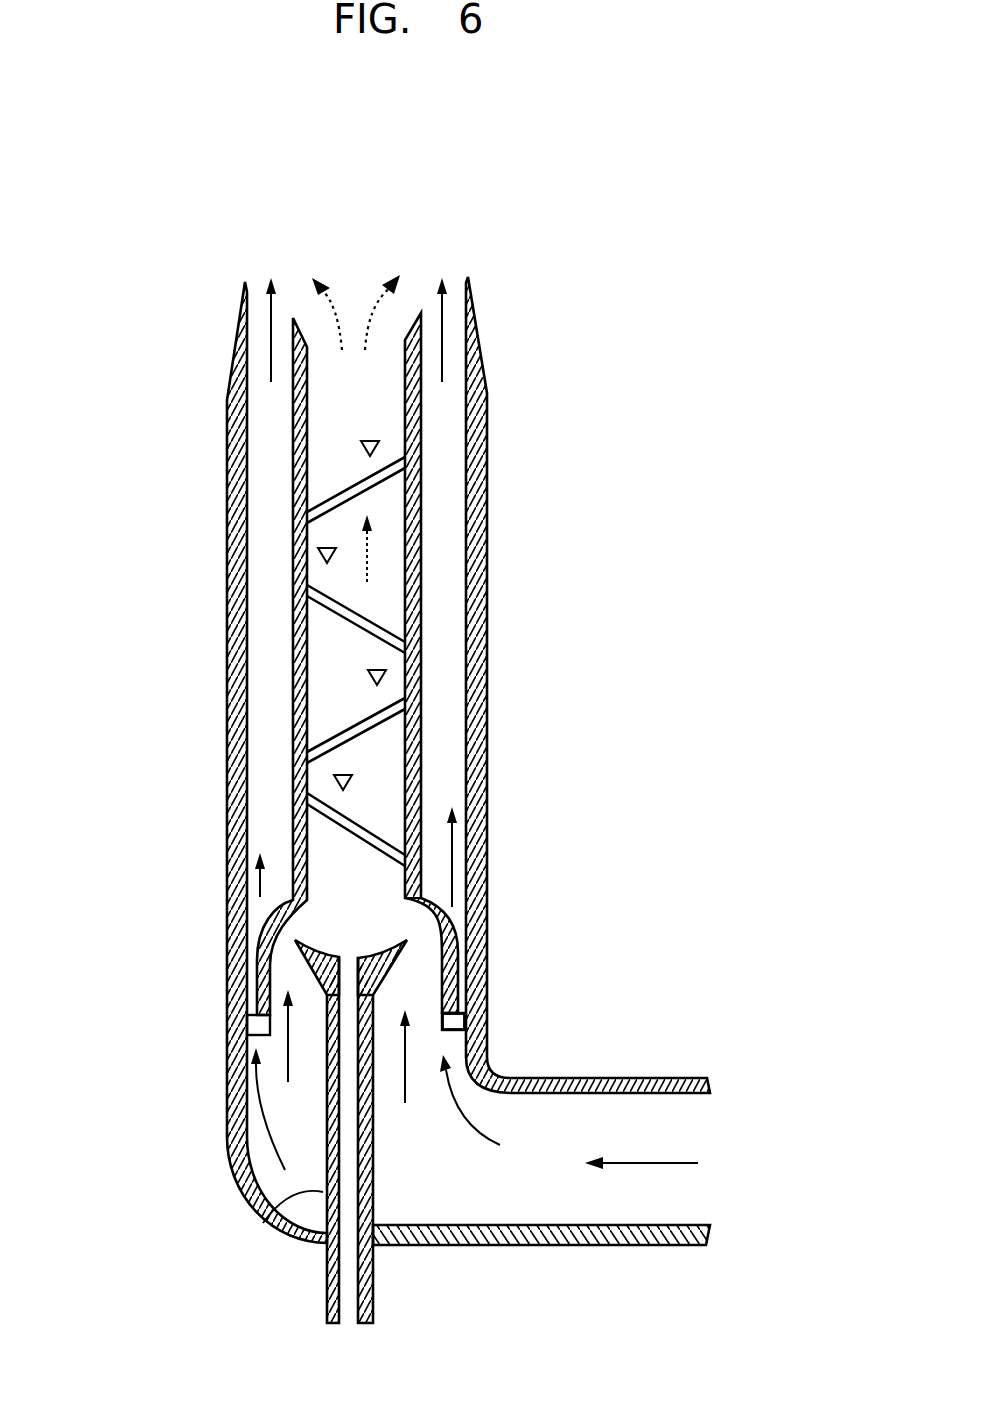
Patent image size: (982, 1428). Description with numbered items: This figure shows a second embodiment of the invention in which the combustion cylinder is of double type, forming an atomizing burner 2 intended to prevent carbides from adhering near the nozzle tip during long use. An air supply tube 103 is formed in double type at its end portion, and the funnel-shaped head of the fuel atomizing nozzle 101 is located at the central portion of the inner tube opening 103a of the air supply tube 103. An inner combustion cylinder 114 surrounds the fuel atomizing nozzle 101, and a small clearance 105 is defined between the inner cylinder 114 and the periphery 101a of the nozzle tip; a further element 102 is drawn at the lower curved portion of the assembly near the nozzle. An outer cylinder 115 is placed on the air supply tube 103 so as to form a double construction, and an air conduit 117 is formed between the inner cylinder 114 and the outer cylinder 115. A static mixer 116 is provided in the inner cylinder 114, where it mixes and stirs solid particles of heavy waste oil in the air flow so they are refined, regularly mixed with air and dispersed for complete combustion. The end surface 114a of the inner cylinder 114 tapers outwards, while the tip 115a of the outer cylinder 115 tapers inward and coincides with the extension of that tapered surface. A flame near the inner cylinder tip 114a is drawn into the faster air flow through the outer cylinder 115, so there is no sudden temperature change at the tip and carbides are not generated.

The atomizing burner 2 is at (508, 904).
The fuel atomizing nozzle 101 is at (328, 1000).
The periphery of the nozzle tip 101a is at (313, 963).
The seal ring 102 is at (263, 1223).
The air supply tube 103 is at (508, 1232).
The inner tube opening 103a is at (448, 1022).
The small clearance 105 is at (288, 913).
The inner combustion cylinder 114 is at (418, 510).
The end surface of the inner cylinder 114a is at (415, 323).
The outer cylinder 115 is at (477, 625).
The tip of the outer cylinder 115a is at (473, 323).
The static mixer 116 is at (377, 728).
The air conduit 117 is at (447, 443).